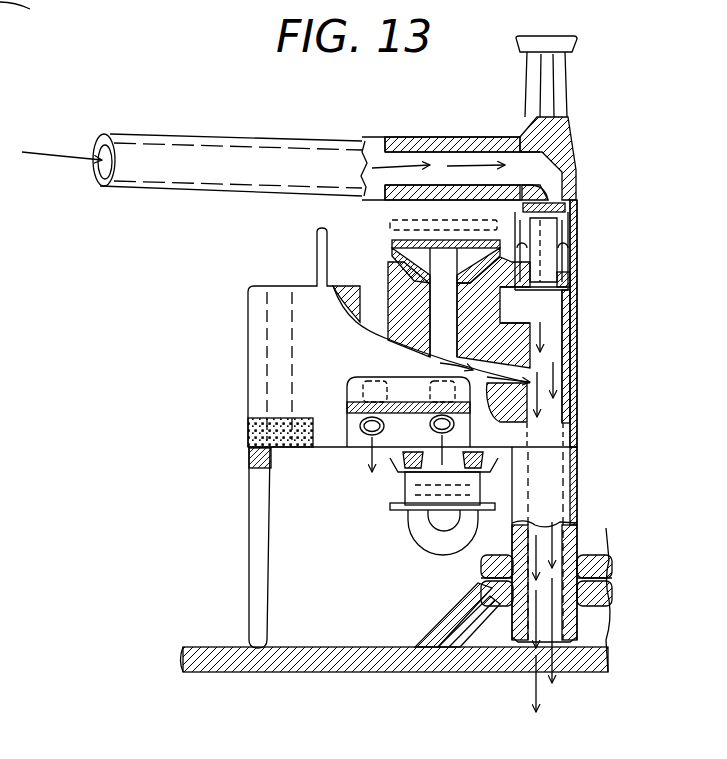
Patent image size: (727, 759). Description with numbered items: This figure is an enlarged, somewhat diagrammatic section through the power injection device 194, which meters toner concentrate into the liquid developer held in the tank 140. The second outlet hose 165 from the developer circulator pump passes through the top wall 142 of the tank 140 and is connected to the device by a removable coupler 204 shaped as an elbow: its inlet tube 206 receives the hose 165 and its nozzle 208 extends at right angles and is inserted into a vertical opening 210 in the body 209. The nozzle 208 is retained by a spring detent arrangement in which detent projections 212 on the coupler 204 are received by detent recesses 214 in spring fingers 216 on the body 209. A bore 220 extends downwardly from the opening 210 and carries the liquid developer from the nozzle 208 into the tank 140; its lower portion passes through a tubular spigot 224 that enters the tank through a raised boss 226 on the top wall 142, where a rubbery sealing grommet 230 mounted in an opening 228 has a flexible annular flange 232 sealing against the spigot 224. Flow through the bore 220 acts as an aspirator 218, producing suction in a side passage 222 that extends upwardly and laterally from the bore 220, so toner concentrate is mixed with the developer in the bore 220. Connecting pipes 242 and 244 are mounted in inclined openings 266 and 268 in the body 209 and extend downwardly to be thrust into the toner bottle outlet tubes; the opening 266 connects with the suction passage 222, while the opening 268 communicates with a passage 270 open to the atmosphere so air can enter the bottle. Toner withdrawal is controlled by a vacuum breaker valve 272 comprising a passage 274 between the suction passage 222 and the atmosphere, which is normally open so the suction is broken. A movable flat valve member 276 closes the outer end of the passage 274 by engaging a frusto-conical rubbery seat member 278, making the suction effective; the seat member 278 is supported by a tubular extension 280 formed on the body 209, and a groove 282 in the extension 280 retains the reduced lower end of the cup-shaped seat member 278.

The tank 140 is at (205, 680).
The top wall 142 is at (335, 647).
The second outlet hose 165 is at (238, 146).
The power injection device 194 is at (228, 294).
The coupler 204 is at (572, 153).
The inlet tube 206 is at (430, 140).
The nozzle 208 is at (567, 332).
The body 209 is at (568, 350).
The vertical opening 210 is at (572, 282).
The detent projections 212 is at (567, 248).
The detent recesses 214 is at (530, 250).
The spring fingers 216 is at (575, 262).
The aspirator 218 is at (550, 341).
The bore 220 is at (553, 363).
The side passage 222 is at (540, 330).
The spigot 224 is at (513, 613).
The raised boss 226 is at (490, 572).
The opening 228 is at (466, 582).
The sealing grommet 230 is at (482, 602).
The annular flange 232 is at (578, 612).
The connecting pipe 242 is at (440, 420).
The connecting pipe 244 is at (360, 426).
The inclined opening 266 is at (445, 375).
The inclined opening 268 is at (358, 373).
The passage 270 is at (388, 300).
The vacuum breaker valve 272 is at (431, 215).
The passage 274 is at (444, 258).
The valve member 276 is at (393, 244).
The seat member 278 is at (402, 258).
The tubular extension 280 is at (493, 312).
The groove 282 is at (493, 271).